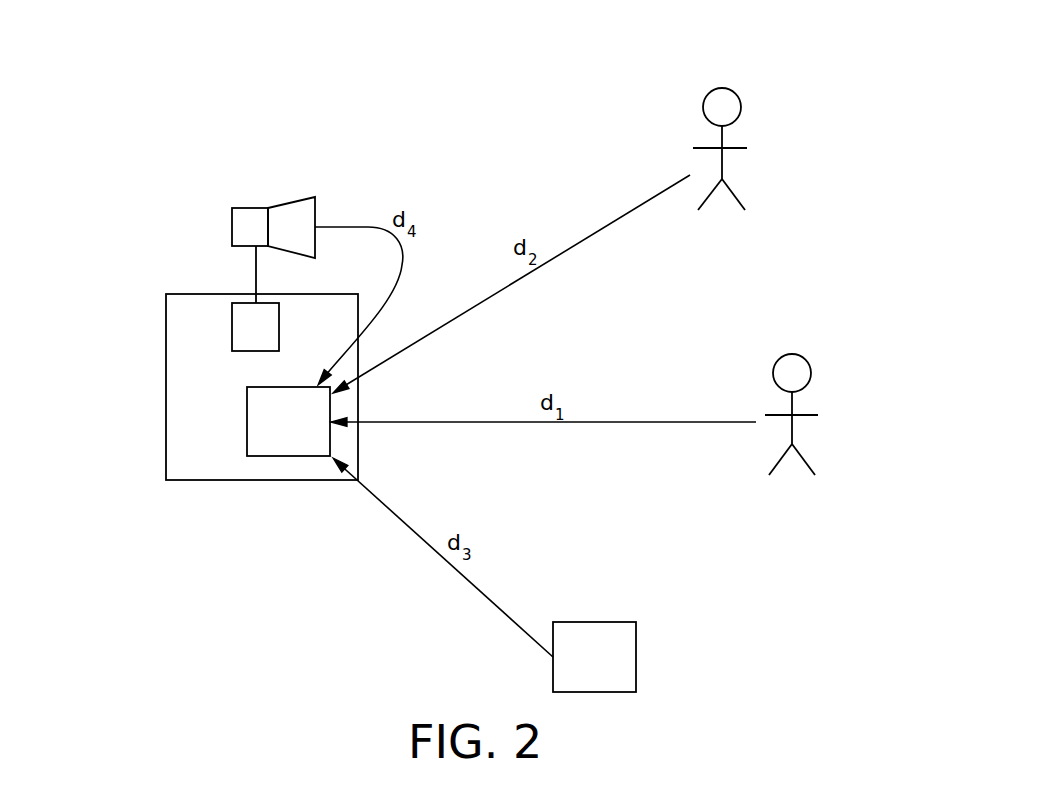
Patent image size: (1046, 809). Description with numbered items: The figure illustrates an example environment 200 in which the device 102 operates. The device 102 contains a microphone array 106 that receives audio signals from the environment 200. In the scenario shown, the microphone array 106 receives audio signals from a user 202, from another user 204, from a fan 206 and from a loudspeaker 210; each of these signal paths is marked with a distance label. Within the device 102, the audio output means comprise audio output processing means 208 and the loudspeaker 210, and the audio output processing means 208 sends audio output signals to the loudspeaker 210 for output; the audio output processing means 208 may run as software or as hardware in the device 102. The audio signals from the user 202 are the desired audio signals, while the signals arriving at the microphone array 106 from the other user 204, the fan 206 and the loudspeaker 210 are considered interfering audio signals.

The environment 200 is at (161, 178).
The device 102 is at (166, 386).
The microphone array 106 is at (270, 457).
The audio output processing means 208 is at (232, 322).
The loudspeaker 210 is at (250, 208).
The user 202 is at (792, 354).
The another user 204 is at (722, 88).
The fan 206 is at (636, 655).